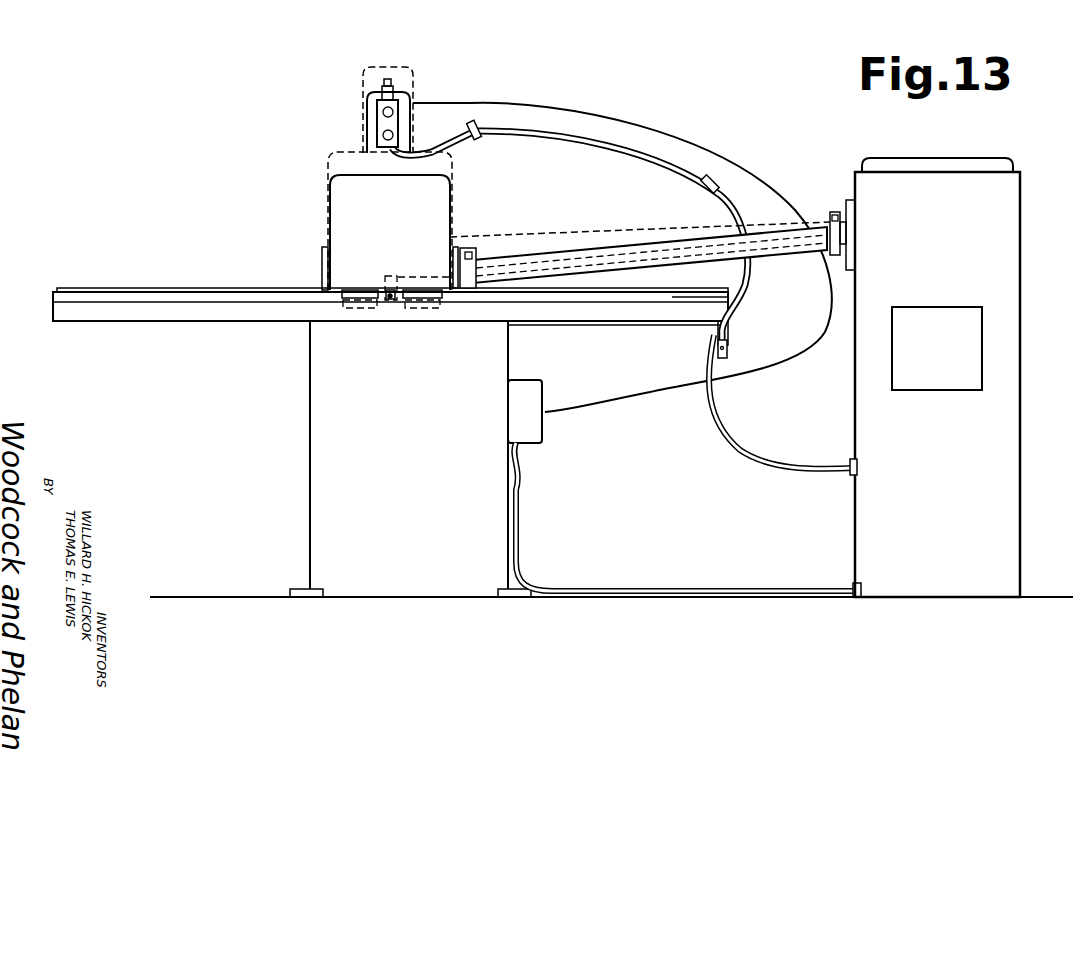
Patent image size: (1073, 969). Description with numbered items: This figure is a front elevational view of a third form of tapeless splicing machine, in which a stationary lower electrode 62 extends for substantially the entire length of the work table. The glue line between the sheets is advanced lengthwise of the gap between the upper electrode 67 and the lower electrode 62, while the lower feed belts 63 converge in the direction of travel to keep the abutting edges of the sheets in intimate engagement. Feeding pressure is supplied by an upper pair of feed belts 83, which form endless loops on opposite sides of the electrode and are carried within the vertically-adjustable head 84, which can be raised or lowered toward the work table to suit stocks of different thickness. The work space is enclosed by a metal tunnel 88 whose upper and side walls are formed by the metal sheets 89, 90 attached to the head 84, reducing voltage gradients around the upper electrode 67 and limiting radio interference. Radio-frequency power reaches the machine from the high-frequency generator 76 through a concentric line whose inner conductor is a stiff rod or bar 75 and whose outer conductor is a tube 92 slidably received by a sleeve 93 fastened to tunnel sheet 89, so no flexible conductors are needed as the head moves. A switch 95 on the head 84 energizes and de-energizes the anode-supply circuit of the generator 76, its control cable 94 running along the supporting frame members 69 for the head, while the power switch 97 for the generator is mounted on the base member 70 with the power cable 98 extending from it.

The supporting frame members 69 is at (607, 118).
The control cable 94 is at (667, 157).
The switch 95 is at (378, 121).
The vertically-adjustable head 84 is at (330, 160).
The stiff rod or bar 75 is at (406, 277).
The sleeve 93 is at (456, 247).
The tube 92 is at (528, 257).
The tunnel 88 is at (204, 295).
The metal sheet 90 is at (265, 290).
The upper feed belts 83 is at (363, 288).
The feed belts 63 is at (352, 308).
The upper electrode 67 is at (388, 301).
The lower electrode 62 is at (393, 310).
The metal sheet 89 is at (680, 285).
The base member 70 is at (311, 483).
The power switch 97 is at (540, 428).
The high-frequency generator 76 is at (1018, 505).
The power cable 98 is at (664, 592).